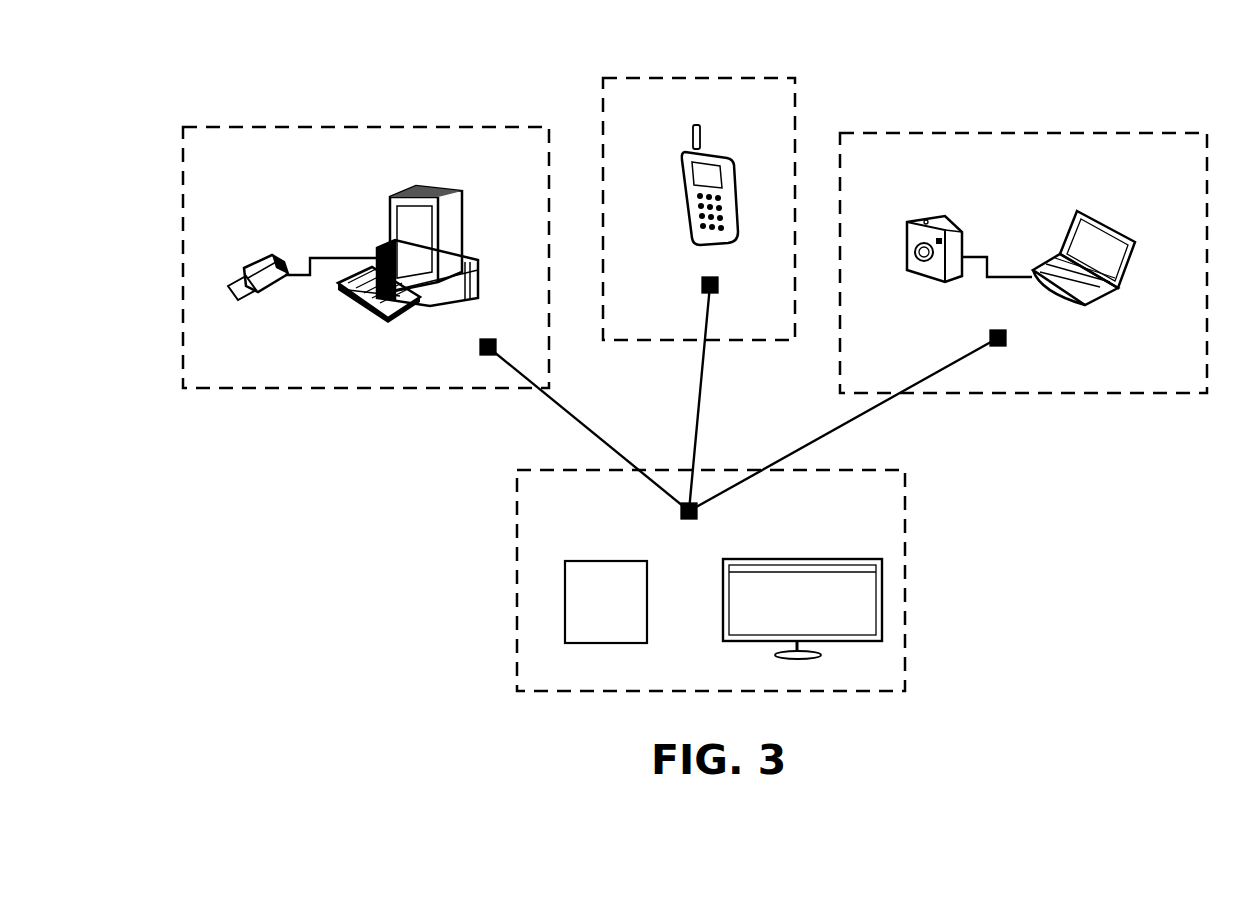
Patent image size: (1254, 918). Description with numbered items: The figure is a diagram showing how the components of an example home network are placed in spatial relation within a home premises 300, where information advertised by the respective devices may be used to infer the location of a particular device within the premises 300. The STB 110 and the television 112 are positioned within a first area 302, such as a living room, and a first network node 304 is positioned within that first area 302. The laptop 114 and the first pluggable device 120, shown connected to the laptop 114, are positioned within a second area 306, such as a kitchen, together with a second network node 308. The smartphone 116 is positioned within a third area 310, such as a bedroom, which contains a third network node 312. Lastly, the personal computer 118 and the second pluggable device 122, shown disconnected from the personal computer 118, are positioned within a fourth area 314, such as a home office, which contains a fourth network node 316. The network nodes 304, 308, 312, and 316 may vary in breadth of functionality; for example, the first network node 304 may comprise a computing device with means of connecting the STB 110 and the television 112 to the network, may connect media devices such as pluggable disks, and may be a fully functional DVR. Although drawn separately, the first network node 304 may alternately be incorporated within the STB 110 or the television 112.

The home premises 300 is at (319, 66).
The first area 302 is at (879, 470).
The first network node 304 is at (774, 510).
The second area 306 is at (1143, 133).
The second network node 308 is at (1083, 342).
The third area 310 is at (752, 78).
The third network node 312 is at (706, 272).
The fourth area 314 is at (509, 127).
The fourth network node 316 is at (401, 346).
The STB 110 is at (606, 602).
The television 112 is at (802, 609).
The laptop 114 is at (1079, 212).
The smartphone 116 is at (693, 130).
The personal computer 118 is at (408, 190).
The first pluggable device 120 is at (930, 218).
The second pluggable device 122 is at (260, 272).